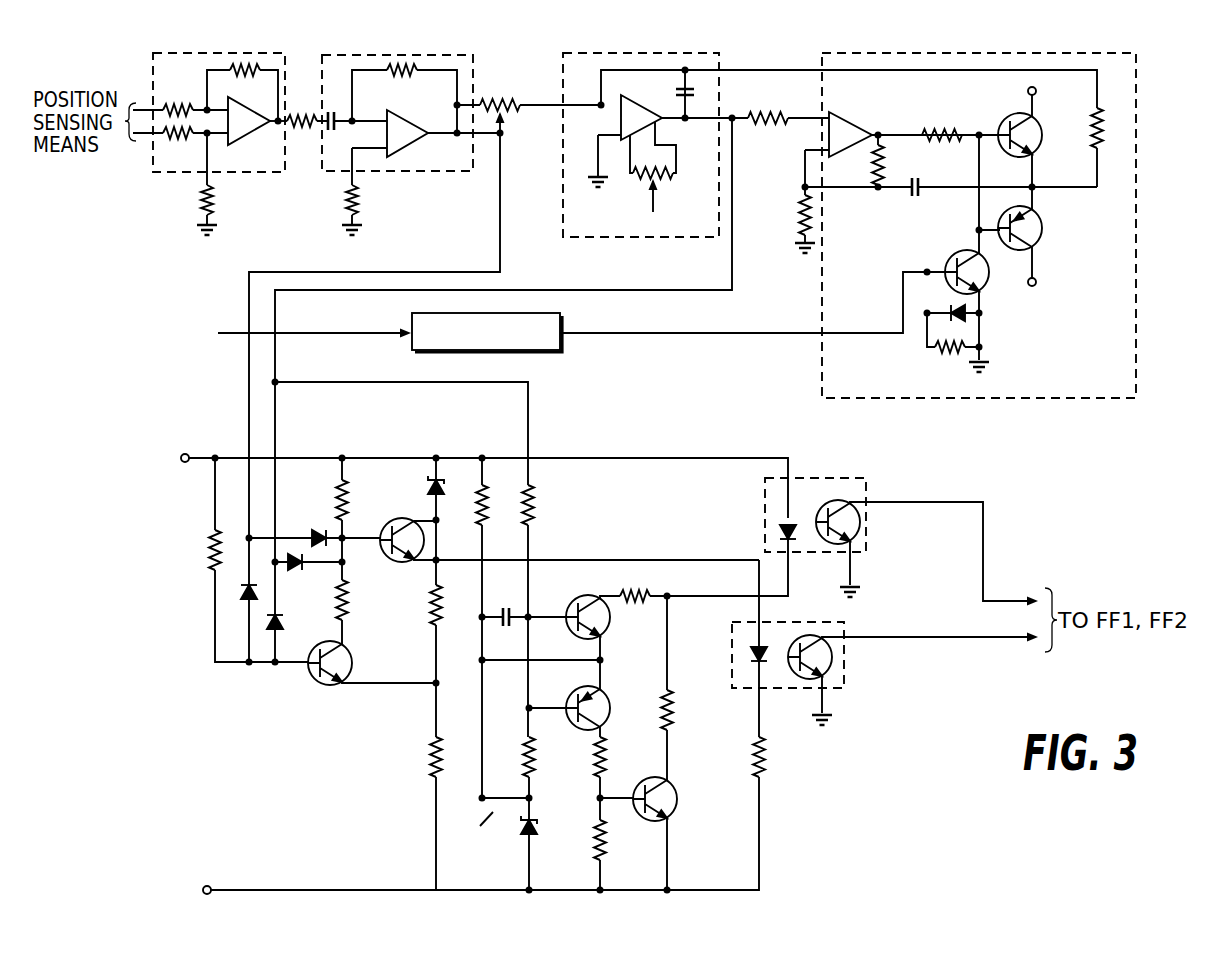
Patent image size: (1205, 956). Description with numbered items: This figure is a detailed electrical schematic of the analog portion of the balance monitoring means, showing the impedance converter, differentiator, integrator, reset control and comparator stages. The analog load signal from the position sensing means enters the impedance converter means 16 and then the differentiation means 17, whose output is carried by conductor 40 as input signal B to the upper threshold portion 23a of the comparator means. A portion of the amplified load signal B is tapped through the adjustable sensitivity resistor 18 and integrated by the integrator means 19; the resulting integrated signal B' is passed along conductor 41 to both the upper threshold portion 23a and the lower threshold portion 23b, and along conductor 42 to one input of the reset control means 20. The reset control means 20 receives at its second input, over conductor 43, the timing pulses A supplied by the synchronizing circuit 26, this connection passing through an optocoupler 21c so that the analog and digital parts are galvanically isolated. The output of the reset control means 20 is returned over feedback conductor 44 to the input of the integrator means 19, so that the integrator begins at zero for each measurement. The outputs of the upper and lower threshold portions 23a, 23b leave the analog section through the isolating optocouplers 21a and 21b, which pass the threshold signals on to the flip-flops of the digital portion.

The impedance converter means 16 is at (237, 165).
The differentiation means 17 is at (390, 168).
The adjustable sensitivity resistor 18 is at (508, 98).
The integrator means 19 is at (617, 232).
The reset control means 20 is at (1120, 237).
The optocoupler 21a is at (843, 655).
The optocoupler 21b is at (866, 549).
The optocoupler 21c is at (560, 345).
The upper threshold portion 23a is at (402, 517).
The lower threshold portion 23b is at (550, 648).
The synchronizing circuit 26 is at (121, 333).
The conductor 40 is at (500, 246).
The conductor 41 is at (718, 290).
The conductor 42 is at (790, 121).
The conductor 43 is at (343, 333).
The feedback conductor 44 is at (752, 70).